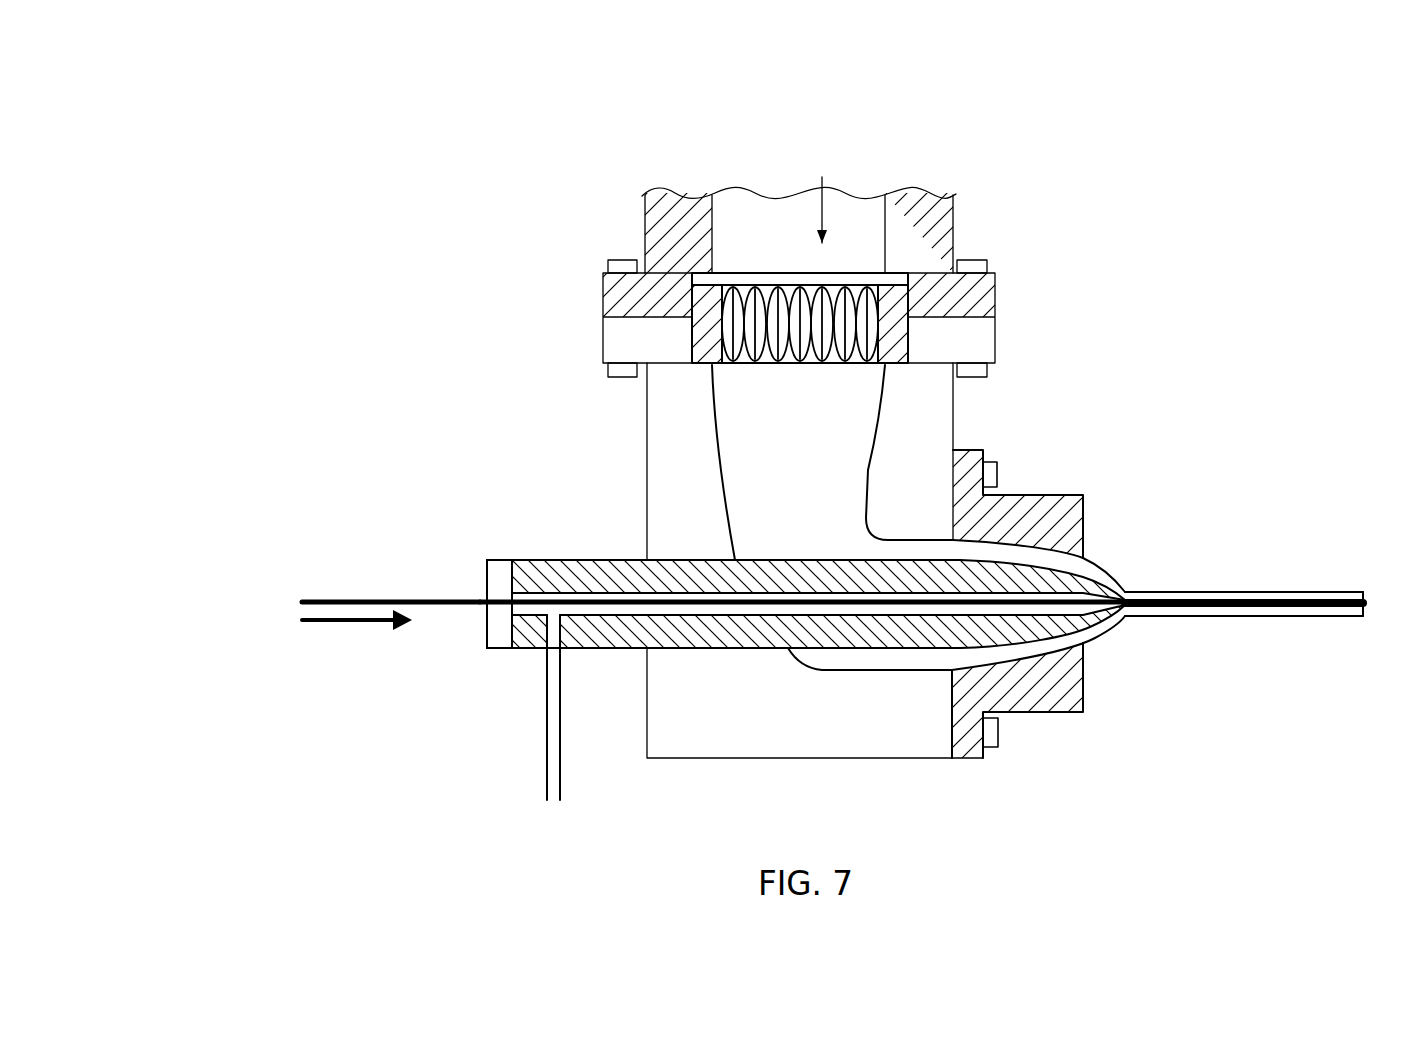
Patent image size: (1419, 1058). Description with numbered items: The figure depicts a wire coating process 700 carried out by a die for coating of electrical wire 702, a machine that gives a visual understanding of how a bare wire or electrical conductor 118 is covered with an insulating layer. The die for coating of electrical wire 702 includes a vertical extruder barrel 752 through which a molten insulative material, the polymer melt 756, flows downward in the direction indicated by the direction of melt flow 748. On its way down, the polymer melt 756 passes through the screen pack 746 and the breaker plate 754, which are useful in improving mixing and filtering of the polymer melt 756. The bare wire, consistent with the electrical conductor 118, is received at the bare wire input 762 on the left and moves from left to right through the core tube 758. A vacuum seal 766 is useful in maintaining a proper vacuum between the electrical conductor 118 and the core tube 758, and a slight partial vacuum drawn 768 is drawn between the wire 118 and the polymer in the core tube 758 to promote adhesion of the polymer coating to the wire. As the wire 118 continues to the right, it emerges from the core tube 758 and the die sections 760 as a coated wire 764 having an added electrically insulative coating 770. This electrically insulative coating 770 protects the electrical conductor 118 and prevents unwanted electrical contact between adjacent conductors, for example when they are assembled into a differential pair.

The wire coating process 700 is at (253, 339).
The die for coating of electrical wire 702 is at (1027, 476).
The screen pack 746 is at (719, 257).
The direction of melt flow 748 is at (820, 182).
The vertical extruder barrel 752 is at (849, 239).
The breaker plate 754 is at (675, 351).
The polymer melt 756 is at (1037, 517).
The core tube 758 is at (742, 570).
The die sections 760 is at (1172, 604).
The bare wire input 762 is at (363, 580).
The coated wire 764 is at (1244, 573).
The vacuum seal 766 is at (407, 651).
The partial vacuum drawn 768 is at (607, 749).
The electrically insulative coating 770 is at (1263, 614).
The electrical conductor 118 is at (677, 645).